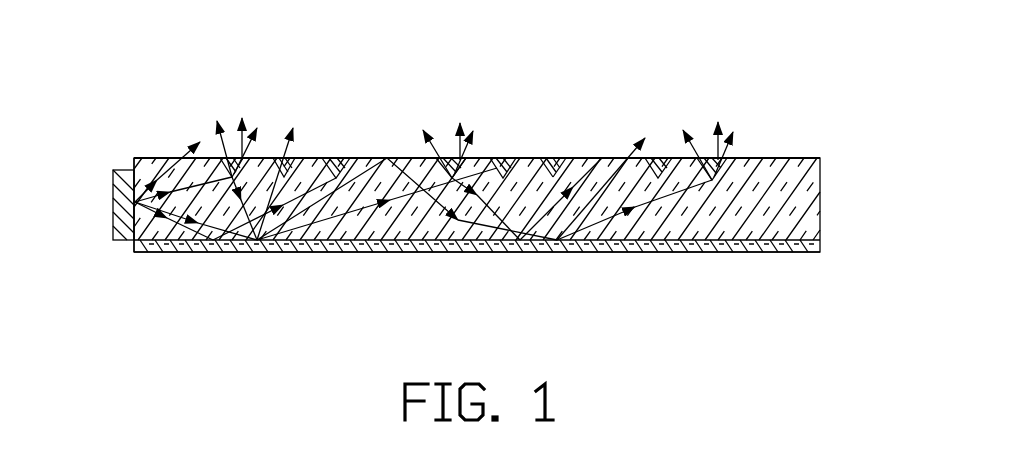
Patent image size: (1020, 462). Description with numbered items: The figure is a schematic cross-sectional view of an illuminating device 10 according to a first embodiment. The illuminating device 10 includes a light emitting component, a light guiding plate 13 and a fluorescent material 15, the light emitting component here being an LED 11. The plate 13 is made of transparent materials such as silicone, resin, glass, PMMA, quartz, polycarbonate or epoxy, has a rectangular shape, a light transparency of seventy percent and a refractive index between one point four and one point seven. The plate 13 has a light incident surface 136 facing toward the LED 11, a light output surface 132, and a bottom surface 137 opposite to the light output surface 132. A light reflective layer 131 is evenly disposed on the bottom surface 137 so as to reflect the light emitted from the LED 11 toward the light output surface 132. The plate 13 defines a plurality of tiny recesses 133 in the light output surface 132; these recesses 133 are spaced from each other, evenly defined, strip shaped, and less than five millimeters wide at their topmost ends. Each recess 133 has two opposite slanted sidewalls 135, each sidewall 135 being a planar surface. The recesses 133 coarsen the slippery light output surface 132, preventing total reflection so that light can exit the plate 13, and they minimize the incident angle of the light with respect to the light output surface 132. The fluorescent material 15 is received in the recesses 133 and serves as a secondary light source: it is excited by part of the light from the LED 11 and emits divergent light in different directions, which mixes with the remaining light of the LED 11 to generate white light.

The illuminating device 10 is at (361, 134).
The LED 11 is at (134, 201).
The light guiding plate 13 is at (798, 188).
The fluorescent material 15 is at (557, 158).
The light reflective layer 131 is at (820, 243).
The light output surface 132 is at (800, 158).
The recess 133 is at (547, 158).
The slanted sidewall 135 is at (566, 158).
The light incident surface 136 is at (134, 160).
The bottom surface 137 is at (163, 243).